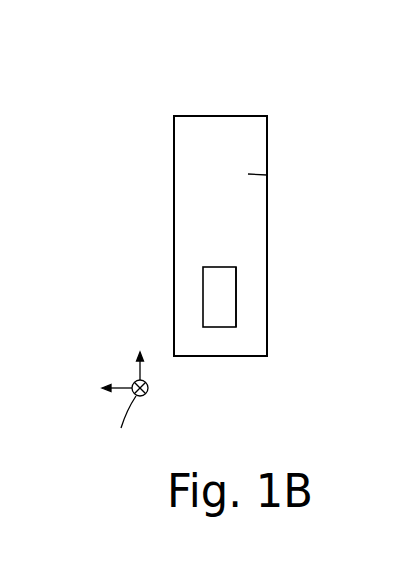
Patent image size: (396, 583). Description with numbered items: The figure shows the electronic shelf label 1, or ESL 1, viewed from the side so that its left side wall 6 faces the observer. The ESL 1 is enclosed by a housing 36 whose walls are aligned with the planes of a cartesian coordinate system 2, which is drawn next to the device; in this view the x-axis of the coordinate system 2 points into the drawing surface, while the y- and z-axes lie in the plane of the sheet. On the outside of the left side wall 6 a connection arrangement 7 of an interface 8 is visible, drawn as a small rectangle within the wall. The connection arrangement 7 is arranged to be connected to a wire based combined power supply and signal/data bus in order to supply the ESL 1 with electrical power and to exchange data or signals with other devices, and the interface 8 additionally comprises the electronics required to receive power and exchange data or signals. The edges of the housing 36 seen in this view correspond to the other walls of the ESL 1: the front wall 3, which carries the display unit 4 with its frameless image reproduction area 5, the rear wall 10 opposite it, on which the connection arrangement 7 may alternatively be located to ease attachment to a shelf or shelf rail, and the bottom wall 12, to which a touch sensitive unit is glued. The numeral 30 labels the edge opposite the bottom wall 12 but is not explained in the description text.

The electronic shelf label 1 is at (268, 115).
The cartesian coordinate system 2 is at (152, 400).
The front wall 3 is at (267, 335).
The display unit 4 is at (268, 313).
The frameless image reproduction area 5 is at (267, 227).
The left side wall 6 is at (248, 174).
The connection arrangement 7 is at (220, 283).
The interface 8 is at (236, 289).
The rear wall 10 is at (174, 199).
The bottom wall 12 is at (219, 356).
The upper edge 30 is at (202, 115).
The housing 36 is at (267, 356).